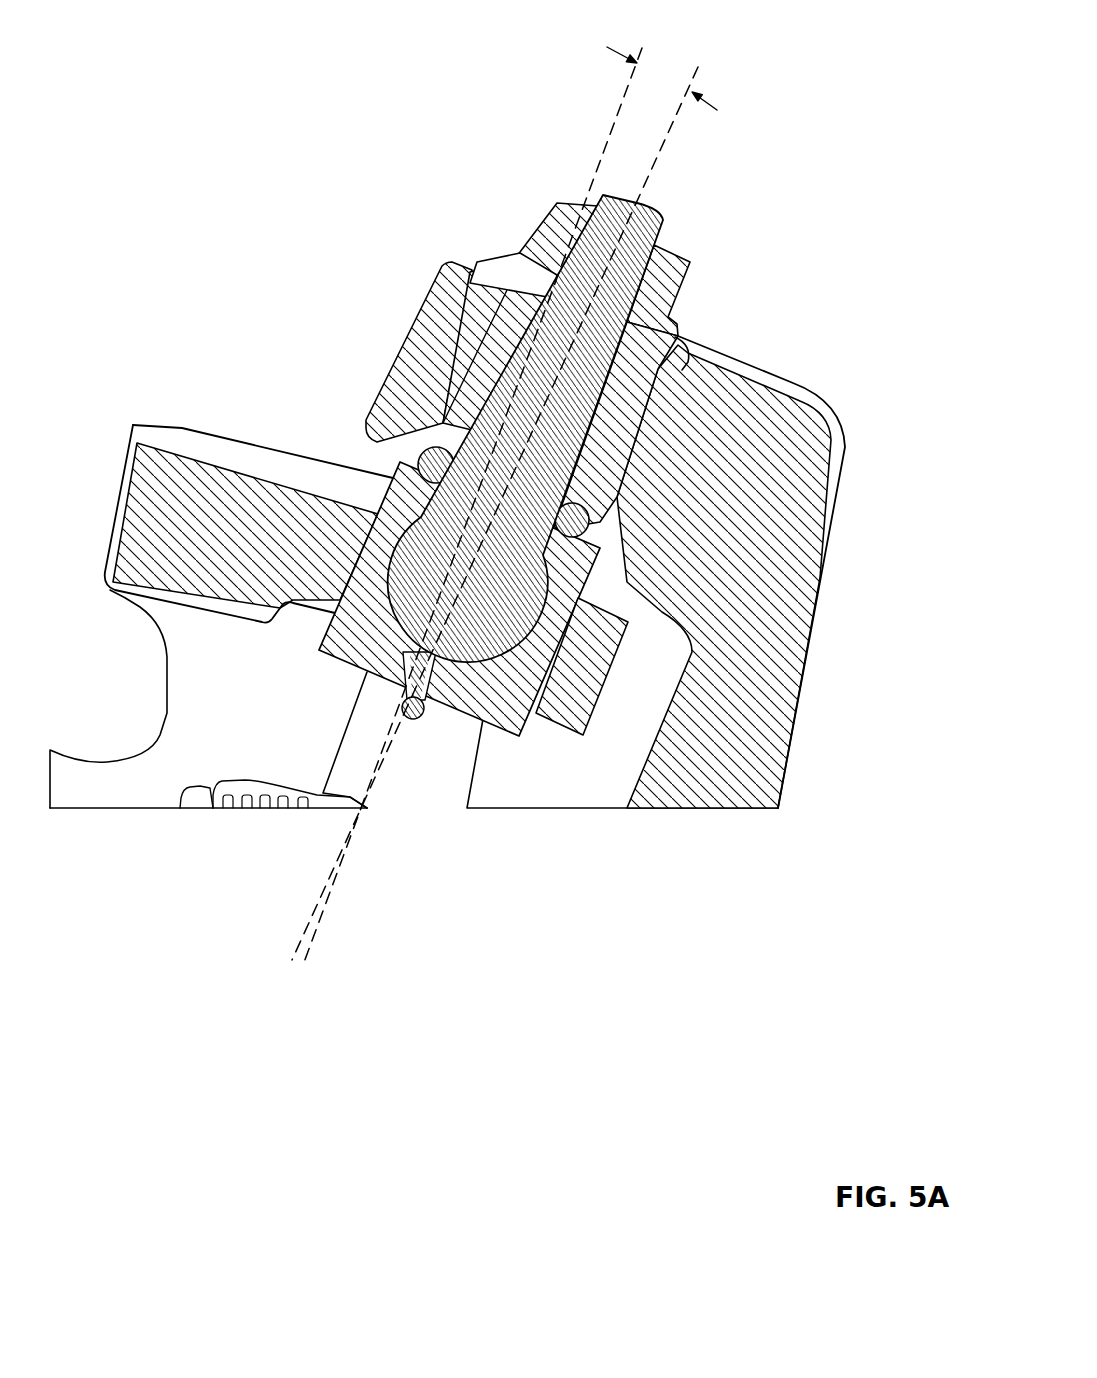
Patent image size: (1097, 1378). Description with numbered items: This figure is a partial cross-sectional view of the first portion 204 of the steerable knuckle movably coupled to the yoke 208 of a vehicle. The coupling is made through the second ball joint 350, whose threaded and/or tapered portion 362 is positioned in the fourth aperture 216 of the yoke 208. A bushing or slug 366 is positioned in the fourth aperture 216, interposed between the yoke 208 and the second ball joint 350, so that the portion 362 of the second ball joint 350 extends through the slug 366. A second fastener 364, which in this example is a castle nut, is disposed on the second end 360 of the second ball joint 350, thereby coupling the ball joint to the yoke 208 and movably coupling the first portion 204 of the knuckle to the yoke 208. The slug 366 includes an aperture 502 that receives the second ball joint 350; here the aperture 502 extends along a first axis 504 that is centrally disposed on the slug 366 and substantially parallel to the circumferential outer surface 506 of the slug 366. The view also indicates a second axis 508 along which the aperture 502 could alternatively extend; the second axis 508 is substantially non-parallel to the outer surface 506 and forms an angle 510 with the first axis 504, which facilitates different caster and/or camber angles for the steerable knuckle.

The first portion 204 is at (166, 424).
The yoke 208 is at (793, 383).
The fourth aperture 216 is at (458, 370).
The second ball joint 350 is at (395, 458).
The second end 360 is at (727, 222).
The portion 362 is at (680, 320).
The second fastener 364 is at (547, 217).
The slug 366 is at (487, 257).
The aperture 502 is at (585, 440).
The first axis 504 is at (670, 137).
The outer surface 506 is at (622, 410).
The second axis 508 is at (602, 152).
The angle 510 is at (663, 63).